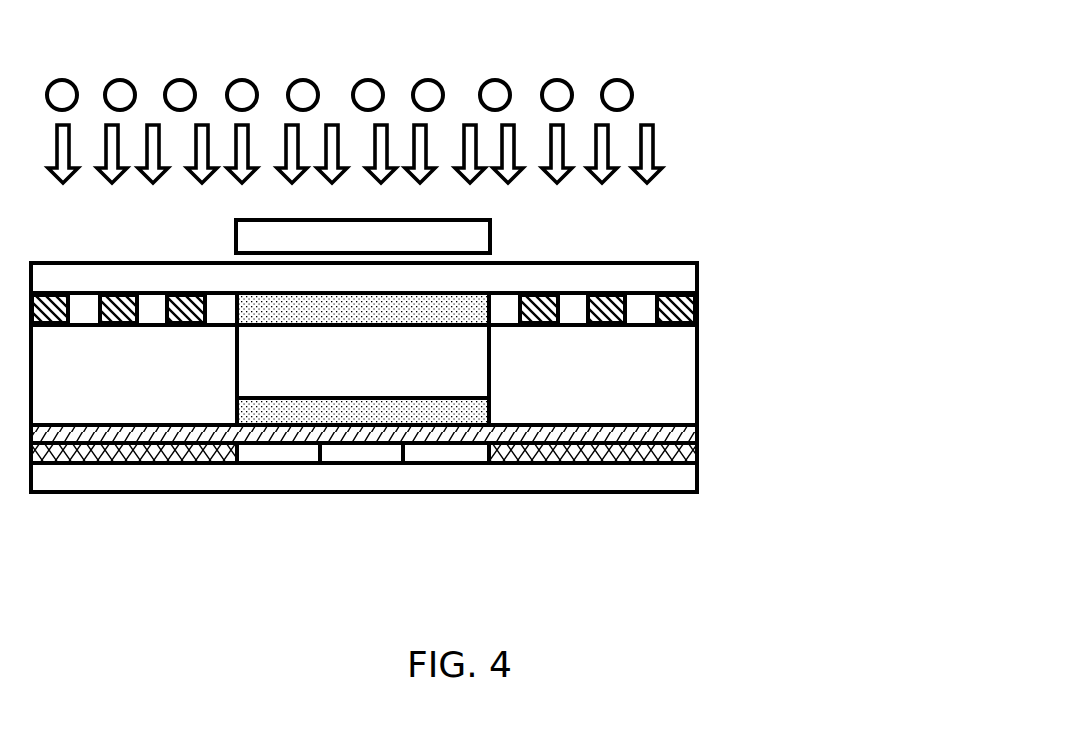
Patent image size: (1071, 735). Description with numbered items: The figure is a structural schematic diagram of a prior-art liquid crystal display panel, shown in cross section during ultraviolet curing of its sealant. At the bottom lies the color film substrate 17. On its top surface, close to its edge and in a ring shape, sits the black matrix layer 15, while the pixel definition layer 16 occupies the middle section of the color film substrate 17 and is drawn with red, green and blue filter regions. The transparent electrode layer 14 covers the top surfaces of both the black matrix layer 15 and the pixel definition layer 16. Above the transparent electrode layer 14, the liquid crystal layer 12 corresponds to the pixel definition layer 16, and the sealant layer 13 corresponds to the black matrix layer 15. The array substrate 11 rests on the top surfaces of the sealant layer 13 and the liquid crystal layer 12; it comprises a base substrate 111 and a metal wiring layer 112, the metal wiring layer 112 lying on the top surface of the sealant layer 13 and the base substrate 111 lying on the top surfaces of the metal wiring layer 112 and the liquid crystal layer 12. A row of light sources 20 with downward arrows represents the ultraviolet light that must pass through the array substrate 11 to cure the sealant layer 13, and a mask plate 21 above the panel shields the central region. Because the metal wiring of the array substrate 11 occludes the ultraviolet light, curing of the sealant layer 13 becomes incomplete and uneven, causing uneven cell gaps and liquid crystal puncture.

The light source (ultraviolet light) 20 is at (628, 84).
The mask plate 21 is at (492, 236).
The array substrate 11 is at (465, 288).
The base substrate 111 is at (676, 277).
The metal wiring layer 112 is at (675, 312).
The liquid crystal layer 12 is at (468, 375).
The sealant layer 13 is at (665, 396).
The transparent electrode layer 14 is at (673, 437).
The black matrix layer 15 is at (422, 507).
The pixel definition layer 16 is at (364, 455).
The color film substrate 17 is at (670, 483).